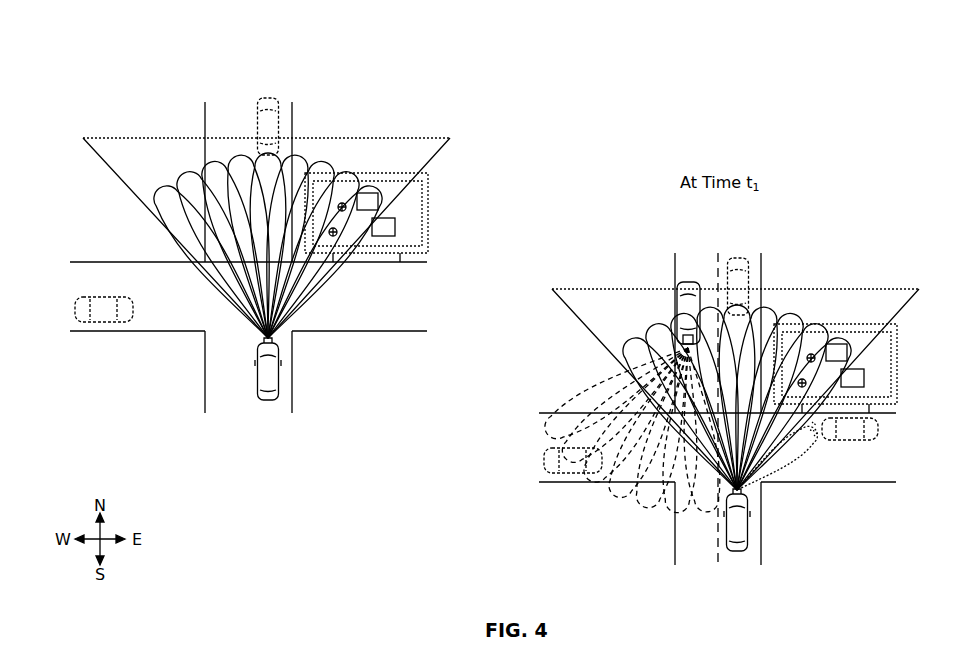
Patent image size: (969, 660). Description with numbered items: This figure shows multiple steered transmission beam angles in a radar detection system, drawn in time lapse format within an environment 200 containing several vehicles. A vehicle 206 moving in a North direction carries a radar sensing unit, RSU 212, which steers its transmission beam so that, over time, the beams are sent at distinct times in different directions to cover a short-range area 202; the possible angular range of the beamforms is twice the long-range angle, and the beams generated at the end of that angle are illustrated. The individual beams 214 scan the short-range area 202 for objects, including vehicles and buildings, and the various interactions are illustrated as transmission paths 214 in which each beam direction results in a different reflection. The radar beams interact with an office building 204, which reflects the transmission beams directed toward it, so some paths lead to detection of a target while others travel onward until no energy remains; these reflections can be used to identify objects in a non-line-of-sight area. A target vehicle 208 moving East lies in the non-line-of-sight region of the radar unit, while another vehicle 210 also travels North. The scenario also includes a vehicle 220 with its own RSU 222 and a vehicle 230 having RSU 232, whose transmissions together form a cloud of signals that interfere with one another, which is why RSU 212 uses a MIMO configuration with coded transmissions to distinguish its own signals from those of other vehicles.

The environment 200 is at (86, 58).
The short-range area 202 is at (198, 136).
The office building 204 is at (397, 172).
The vehicle 206 is at (265, 401).
The target vehicle 208 is at (75, 306).
The vehicle 210 is at (266, 97).
The radar sensing unit (RSU) 212 is at (257, 347).
The transmission paths 214 is at (325, 282).
The vehicle 220 is at (879, 430).
The RSU 222 is at (824, 440).
The vehicle 230 is at (690, 282).
The RSU 232 is at (678, 347).